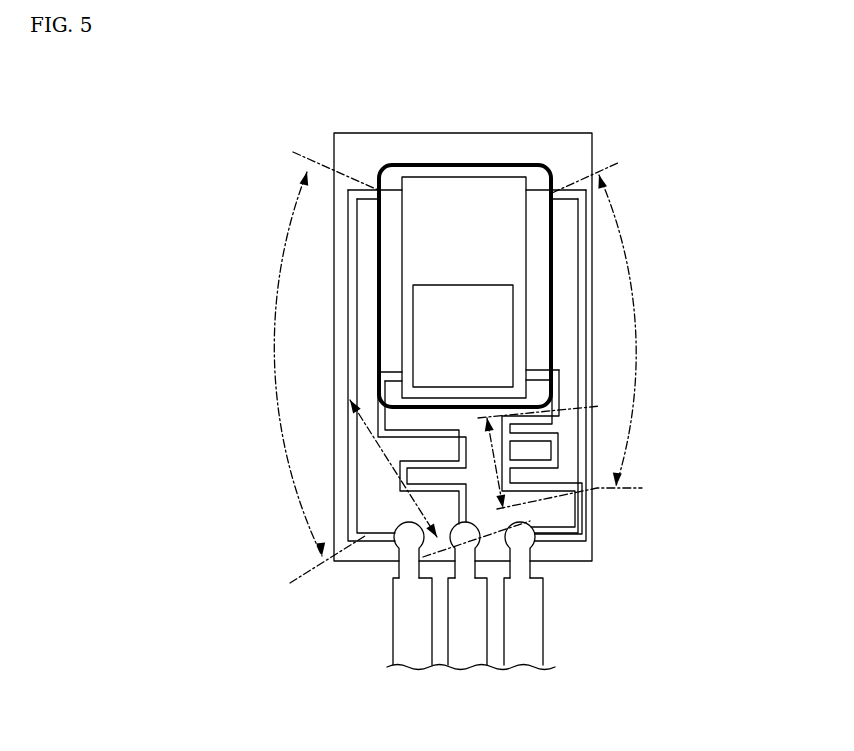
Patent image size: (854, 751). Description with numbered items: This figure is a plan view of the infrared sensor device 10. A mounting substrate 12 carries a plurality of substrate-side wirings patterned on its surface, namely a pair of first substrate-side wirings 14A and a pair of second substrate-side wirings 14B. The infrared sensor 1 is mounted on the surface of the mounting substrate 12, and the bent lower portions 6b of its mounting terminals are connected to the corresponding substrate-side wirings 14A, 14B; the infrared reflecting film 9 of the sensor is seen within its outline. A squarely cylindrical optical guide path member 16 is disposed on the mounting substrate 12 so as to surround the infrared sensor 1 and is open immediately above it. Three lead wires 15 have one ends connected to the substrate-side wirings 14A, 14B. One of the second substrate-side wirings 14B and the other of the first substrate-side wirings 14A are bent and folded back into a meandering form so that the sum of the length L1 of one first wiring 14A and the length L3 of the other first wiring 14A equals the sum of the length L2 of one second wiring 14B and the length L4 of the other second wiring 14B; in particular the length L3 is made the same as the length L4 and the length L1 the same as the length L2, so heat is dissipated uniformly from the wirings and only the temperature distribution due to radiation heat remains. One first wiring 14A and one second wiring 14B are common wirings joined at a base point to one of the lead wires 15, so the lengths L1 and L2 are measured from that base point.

The infrared sensor 1 is at (486, 201).
The lower portion of the mounting terminal 6b is at (388, 190).
The infrared reflecting film 9 is at (480, 348).
The infrared sensor device 10 is at (667, 165).
The mounting substrate 12 is at (343, 163).
The first substrate-side wirings 14A is at (348, 233).
The second substrate-side wirings 14B is at (376, 433).
The lead wires 15 is at (392, 632).
The optical guide path member 16 is at (377, 272).
The length of one first substrate-side wiring L1 is at (611, 324).
The length of one second substrate-side wiring L2 is at (520, 560).
The length of the other first substrate-side wiring L3 is at (307, 354).
The length of the other second substrate-side wiring L4 is at (305, 548).